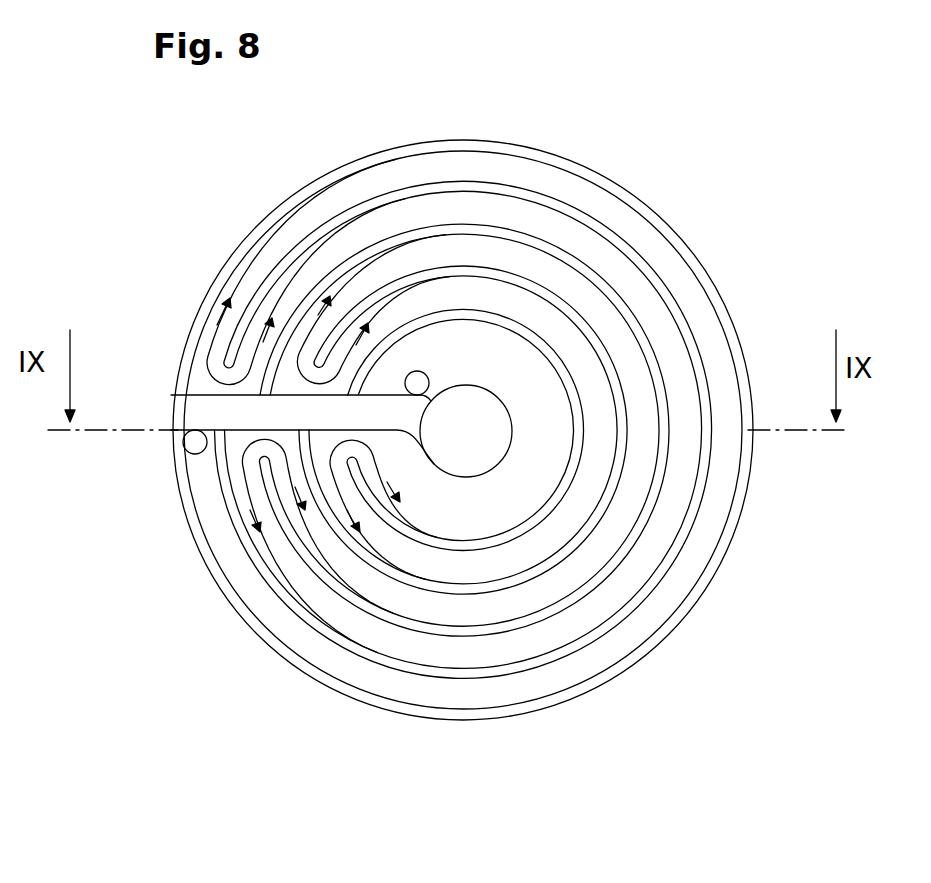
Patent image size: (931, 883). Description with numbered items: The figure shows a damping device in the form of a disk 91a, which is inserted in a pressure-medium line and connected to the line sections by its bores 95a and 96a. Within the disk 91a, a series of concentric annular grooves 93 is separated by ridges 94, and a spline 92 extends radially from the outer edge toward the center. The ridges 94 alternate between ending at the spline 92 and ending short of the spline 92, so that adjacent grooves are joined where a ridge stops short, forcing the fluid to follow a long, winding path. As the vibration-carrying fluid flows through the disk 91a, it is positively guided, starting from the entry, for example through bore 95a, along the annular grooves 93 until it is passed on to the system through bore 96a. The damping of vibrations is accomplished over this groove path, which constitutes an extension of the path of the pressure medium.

The disk 91a is at (637, 133).
The spline 92 is at (190, 413).
The annular grooves 93 is at (727, 400).
The ridges 94 is at (654, 275).
The bore 95a is at (195, 442).
The bore 96a is at (417, 383).